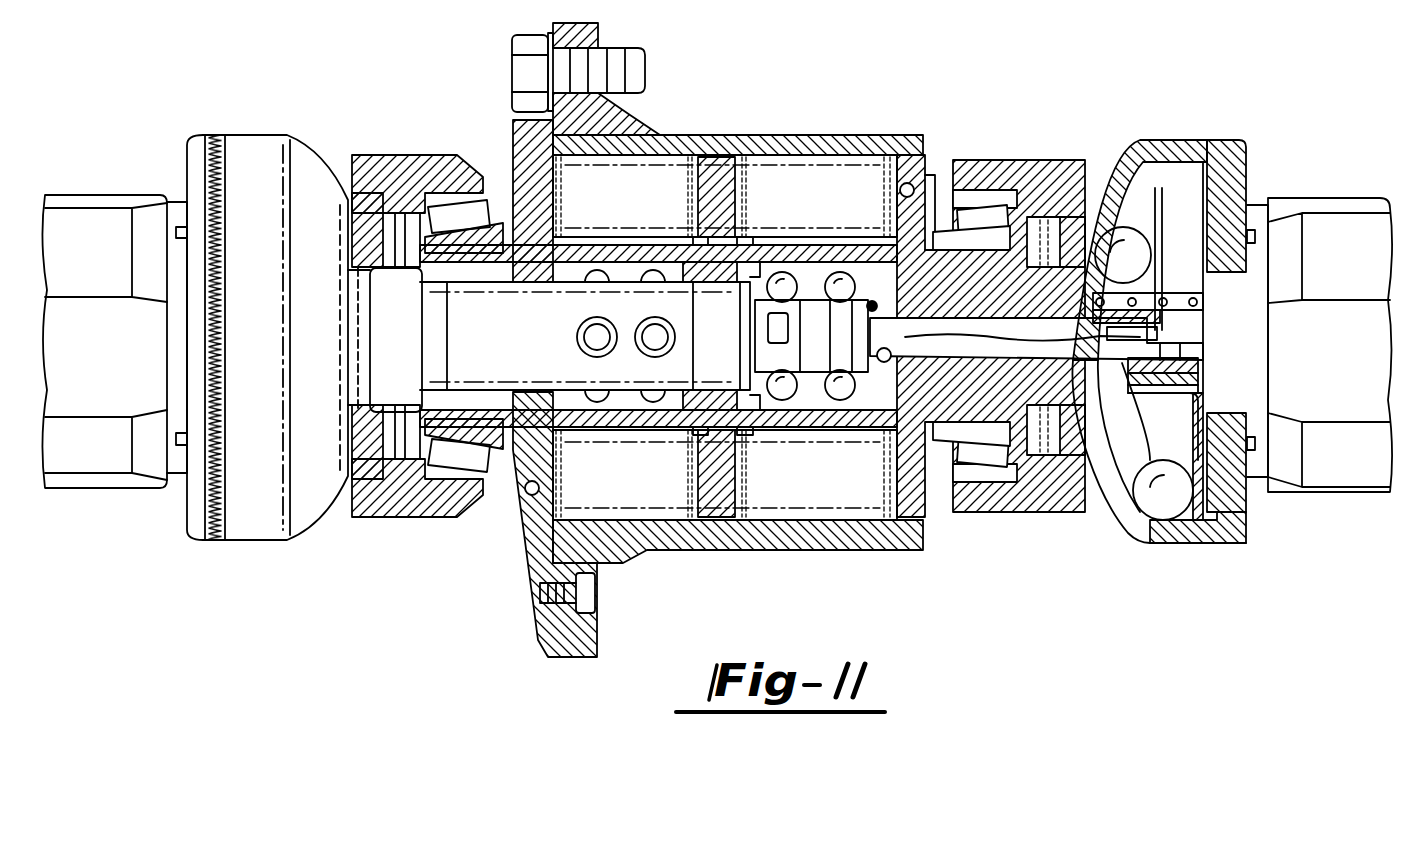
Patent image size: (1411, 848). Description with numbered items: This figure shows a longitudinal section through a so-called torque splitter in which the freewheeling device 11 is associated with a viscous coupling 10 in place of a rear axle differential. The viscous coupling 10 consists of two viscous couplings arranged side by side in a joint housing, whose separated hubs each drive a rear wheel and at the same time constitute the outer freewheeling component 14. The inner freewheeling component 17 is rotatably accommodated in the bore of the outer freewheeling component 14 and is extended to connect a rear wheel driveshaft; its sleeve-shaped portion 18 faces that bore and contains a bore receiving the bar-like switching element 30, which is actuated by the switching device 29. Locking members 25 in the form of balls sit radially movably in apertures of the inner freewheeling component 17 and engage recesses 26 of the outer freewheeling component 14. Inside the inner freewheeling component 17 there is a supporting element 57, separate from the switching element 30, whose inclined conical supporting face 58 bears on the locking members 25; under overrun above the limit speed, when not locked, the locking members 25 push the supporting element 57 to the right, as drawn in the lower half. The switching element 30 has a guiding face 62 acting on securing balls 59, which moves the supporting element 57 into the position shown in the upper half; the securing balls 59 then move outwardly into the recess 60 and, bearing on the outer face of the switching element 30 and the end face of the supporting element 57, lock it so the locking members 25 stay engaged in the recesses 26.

The viscous coupling 10 is at (733, 157).
The freewheeling device 11 is at (1098, 146).
The outer freewheeling component 14 is at (857, 157).
The inner freewheeling component 17 is at (960, 372).
The sleeve-shaped portion 18 is at (752, 395).
The locking members 25 is at (834, 273).
The recesses 26 is at (782, 272).
The switching device 29 is at (1175, 192).
The switching element 30 is at (932, 165).
The supporting element 57 is at (1047, 200).
The supporting face 58 is at (803, 302).
The securing balls 59 is at (1008, 318).
The recess 60 is at (875, 303).
The guiding face 62 is at (842, 402).